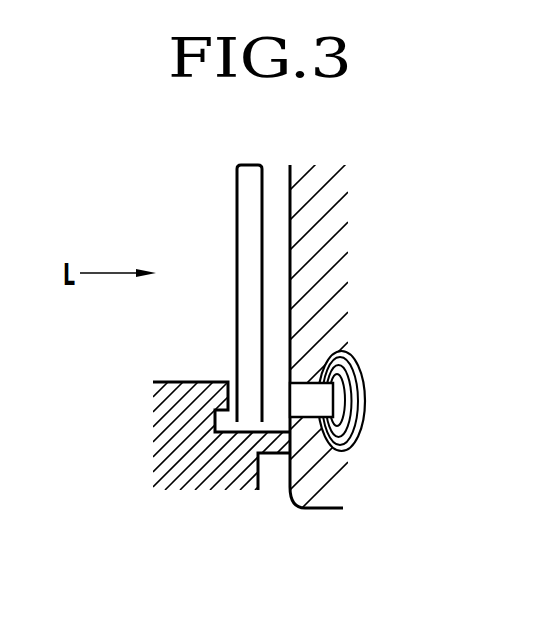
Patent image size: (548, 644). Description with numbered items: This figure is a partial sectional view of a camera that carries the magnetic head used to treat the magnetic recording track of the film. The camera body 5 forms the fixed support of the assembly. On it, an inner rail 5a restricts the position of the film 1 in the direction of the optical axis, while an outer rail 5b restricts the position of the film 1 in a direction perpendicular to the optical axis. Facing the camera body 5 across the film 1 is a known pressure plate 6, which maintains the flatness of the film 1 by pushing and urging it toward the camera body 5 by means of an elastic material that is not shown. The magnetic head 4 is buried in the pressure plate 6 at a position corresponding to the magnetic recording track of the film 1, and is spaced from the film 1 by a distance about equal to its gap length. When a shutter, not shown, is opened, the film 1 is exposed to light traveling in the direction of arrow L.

The film 1 is at (247, 197).
The magnetic head 4 is at (362, 423).
The camera body 5 is at (197, 436).
The inner rail 5a is at (228, 381).
The outer rail 5b is at (268, 455).
The pressure plate 6 is at (318, 265).